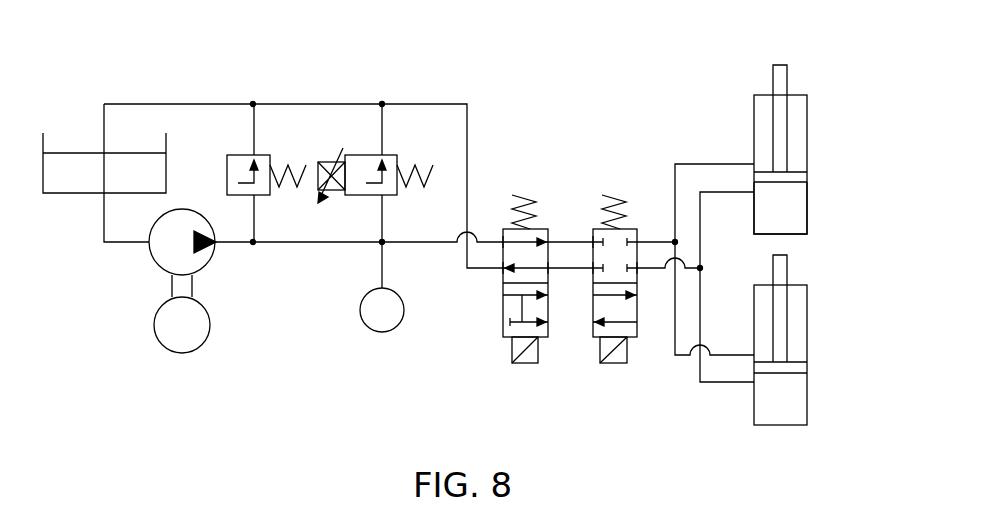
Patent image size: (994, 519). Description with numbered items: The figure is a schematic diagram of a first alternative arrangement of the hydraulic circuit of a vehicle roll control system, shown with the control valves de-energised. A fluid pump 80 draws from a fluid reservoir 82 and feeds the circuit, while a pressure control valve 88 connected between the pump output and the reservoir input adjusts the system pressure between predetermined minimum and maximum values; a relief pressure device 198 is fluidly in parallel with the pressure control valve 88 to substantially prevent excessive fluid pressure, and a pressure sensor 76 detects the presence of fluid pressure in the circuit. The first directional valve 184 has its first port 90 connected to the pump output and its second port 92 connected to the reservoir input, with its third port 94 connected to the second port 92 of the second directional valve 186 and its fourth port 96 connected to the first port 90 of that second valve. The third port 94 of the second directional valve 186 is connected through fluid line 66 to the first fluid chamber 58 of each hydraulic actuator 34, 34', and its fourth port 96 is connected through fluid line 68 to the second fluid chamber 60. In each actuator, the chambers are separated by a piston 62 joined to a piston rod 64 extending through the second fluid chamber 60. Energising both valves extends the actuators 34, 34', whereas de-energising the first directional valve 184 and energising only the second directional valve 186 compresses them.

The hydraulic actuator 34 is at (817, 128).
The hydraulic actuator 34' is at (821, 366).
The first fluid chamber 58 is at (804, 222).
The second fluid chamber 60 is at (803, 120).
The piston 62 is at (804, 177).
The piston rod 64 is at (784, 76).
The fluid line 66 is at (742, 192).
The fluid line 68 is at (738, 164).
The pressure sensor 76 is at (365, 294).
The fluid pump 80 is at (149, 252).
The fluid reservoir 82 is at (68, 186).
The pressure control valve 88 is at (392, 155).
The first port 90 is at (504, 242).
The second port 92 is at (503, 270).
The third port 94 is at (550, 275).
The fourth port 96 is at (549, 240).
The first directional valve 184 is at (499, 357).
The second directional valve 186 is at (592, 357).
The relief pressure device 198 is at (262, 155).